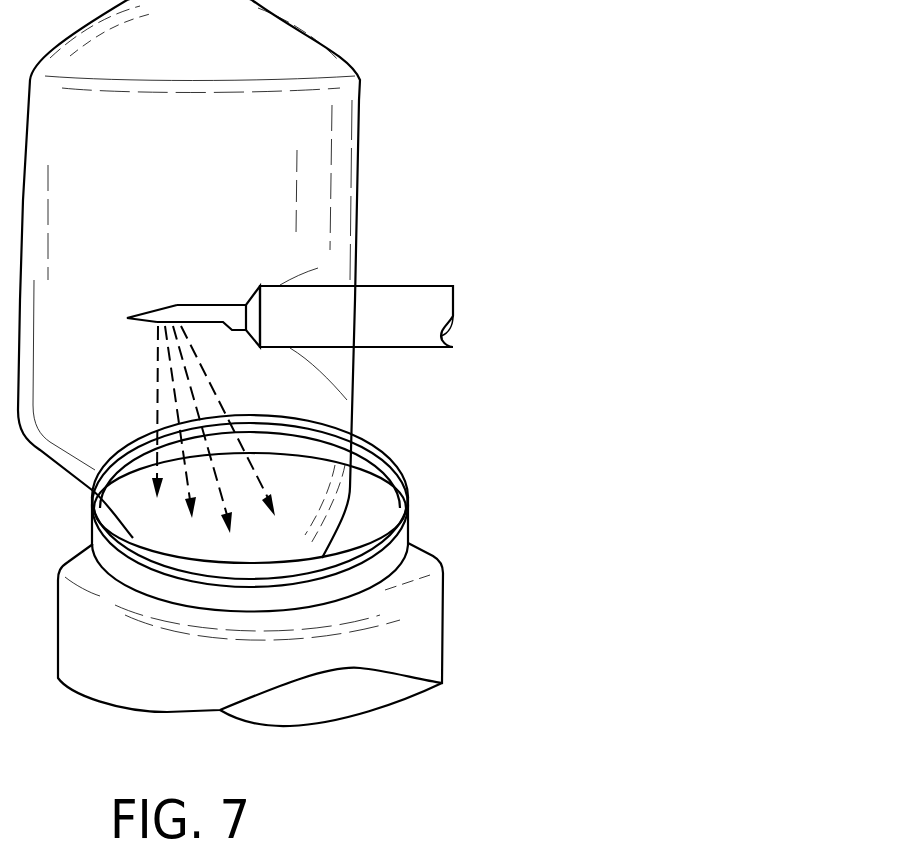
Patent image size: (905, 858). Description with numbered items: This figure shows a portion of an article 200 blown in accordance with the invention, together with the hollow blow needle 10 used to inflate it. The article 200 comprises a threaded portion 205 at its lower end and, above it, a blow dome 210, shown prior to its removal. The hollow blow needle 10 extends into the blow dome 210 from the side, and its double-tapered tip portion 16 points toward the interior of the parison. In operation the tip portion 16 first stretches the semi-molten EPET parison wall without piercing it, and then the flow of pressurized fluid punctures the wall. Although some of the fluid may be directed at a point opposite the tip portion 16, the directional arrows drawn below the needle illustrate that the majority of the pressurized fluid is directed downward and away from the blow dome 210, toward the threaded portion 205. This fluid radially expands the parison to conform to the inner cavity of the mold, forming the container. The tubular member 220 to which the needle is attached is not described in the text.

The hollow blow needle 10 is at (237, 307).
The double-tapered tip portion 16 is at (155, 316).
The article 200 is at (392, 424).
The threaded portion 205 is at (431, 556).
The blow dome 210 is at (340, 167).
The tube 220 is at (318, 287).